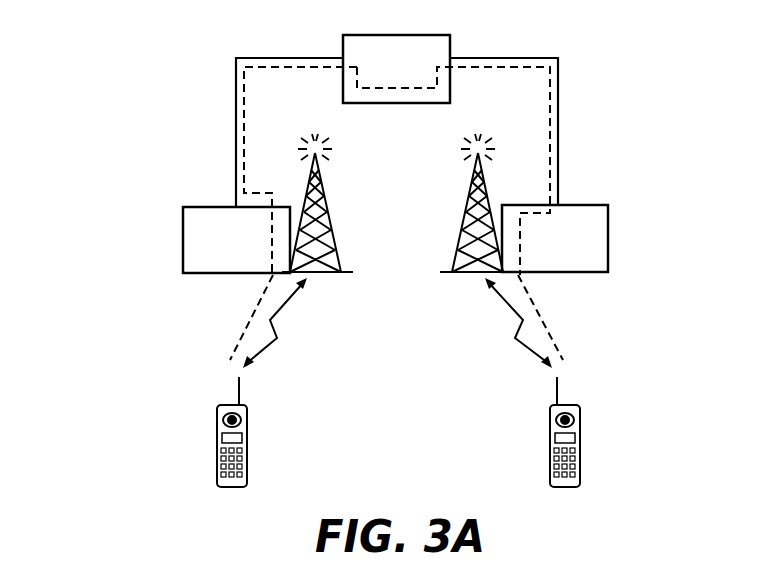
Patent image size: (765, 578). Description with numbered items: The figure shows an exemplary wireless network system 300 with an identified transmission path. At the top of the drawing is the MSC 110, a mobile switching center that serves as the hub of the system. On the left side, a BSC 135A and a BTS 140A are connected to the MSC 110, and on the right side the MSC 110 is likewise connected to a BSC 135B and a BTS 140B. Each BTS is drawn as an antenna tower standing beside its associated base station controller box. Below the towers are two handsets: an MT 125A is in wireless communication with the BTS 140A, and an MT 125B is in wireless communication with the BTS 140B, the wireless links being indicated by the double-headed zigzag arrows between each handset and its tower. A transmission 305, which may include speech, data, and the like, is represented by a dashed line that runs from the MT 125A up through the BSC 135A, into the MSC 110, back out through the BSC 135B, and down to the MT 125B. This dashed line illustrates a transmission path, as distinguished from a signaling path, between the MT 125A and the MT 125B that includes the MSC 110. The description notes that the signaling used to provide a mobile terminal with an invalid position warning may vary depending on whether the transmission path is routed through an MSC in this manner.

The wireless network system 300 is at (112, 136).
The MSC 110 is at (415, 35).
The BSC 135A is at (205, 207).
The BSC 135B is at (588, 205).
The BTS 140A is at (320, 190).
The BTS 140B is at (462, 218).
The transmission 305 is at (240, 340).
The MT 125A is at (217, 447).
The MT 125B is at (580, 447).